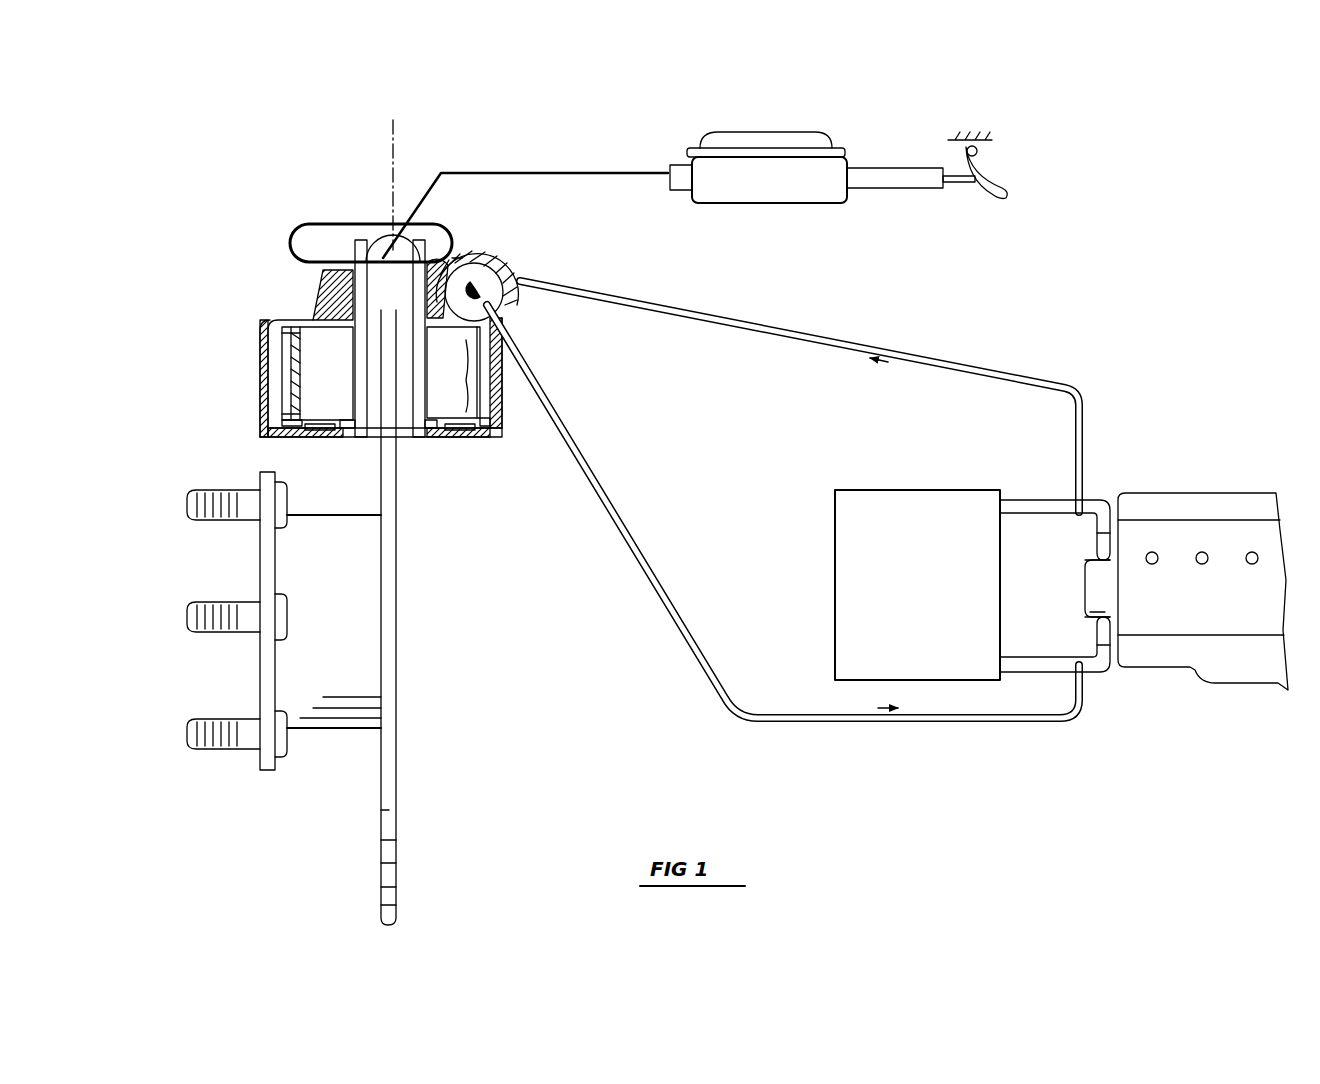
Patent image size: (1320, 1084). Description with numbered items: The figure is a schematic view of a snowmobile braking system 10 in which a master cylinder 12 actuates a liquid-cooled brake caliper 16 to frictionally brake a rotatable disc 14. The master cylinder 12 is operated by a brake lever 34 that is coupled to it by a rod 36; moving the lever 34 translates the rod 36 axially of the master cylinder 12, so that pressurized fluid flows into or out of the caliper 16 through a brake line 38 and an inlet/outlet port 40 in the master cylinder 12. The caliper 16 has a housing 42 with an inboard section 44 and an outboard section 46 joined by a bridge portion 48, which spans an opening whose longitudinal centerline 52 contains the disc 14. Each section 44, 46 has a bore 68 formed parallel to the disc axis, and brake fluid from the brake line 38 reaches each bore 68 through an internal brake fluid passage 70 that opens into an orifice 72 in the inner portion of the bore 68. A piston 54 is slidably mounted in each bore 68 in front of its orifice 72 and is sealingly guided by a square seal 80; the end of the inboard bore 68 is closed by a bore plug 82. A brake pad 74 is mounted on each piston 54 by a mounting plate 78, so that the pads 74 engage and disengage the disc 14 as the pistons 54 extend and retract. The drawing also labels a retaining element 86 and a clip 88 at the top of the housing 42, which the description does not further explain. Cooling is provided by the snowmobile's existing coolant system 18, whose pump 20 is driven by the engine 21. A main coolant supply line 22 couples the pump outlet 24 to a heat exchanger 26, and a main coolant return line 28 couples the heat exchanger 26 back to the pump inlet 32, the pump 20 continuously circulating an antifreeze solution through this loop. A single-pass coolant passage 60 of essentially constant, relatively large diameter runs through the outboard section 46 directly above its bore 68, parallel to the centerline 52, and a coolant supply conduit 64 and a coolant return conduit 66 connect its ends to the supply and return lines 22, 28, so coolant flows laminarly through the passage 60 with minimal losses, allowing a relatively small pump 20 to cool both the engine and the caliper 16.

The snowmobile braking system 10 is at (272, 188).
The master cylinder 12 is at (840, 140).
The rotatable disc 14 is at (396, 842).
The brake caliper 16 is at (258, 320).
The coolant system 18 is at (1132, 689).
The pump 20 is at (1086, 586).
The engine 21 is at (1232, 472).
The main coolant supply line 22 is at (1028, 500).
The pump outlet 24 is at (1088, 558).
The heat exchanger 26 is at (952, 490).
The main coolant return line 28 is at (1042, 668).
The pump inlet 32 is at (1092, 620).
The brake lever 34 is at (1010, 183).
The rod 36 is at (966, 183).
The brake line 38 is at (617, 167).
The inlet/outlet port 40 is at (672, 185).
The housing 42 is at (312, 291).
The inboard section 44 is at (266, 431).
The outboard section 46 is at (492, 430).
The bridge portion 48 is at (380, 240).
The longitudinal centerline 52 is at (394, 140).
The piston 54 is at (300, 380).
The coolant passage 60 is at (500, 262).
The coolant supply conduit 64 is at (1068, 385).
The coolant return conduit 66 is at (712, 682).
The bore 68 is at (292, 437).
The internal brake fluid passage 70 is at (468, 262).
The orifice 72 is at (270, 346).
The brake pad 74 is at (364, 440).
The mounting plate 78 is at (350, 430).
The square seal 80 is at (325, 432).
The bore plug 82 is at (284, 372).
The clip assembly 86 is at (322, 221).
The clip 88 is at (290, 232).